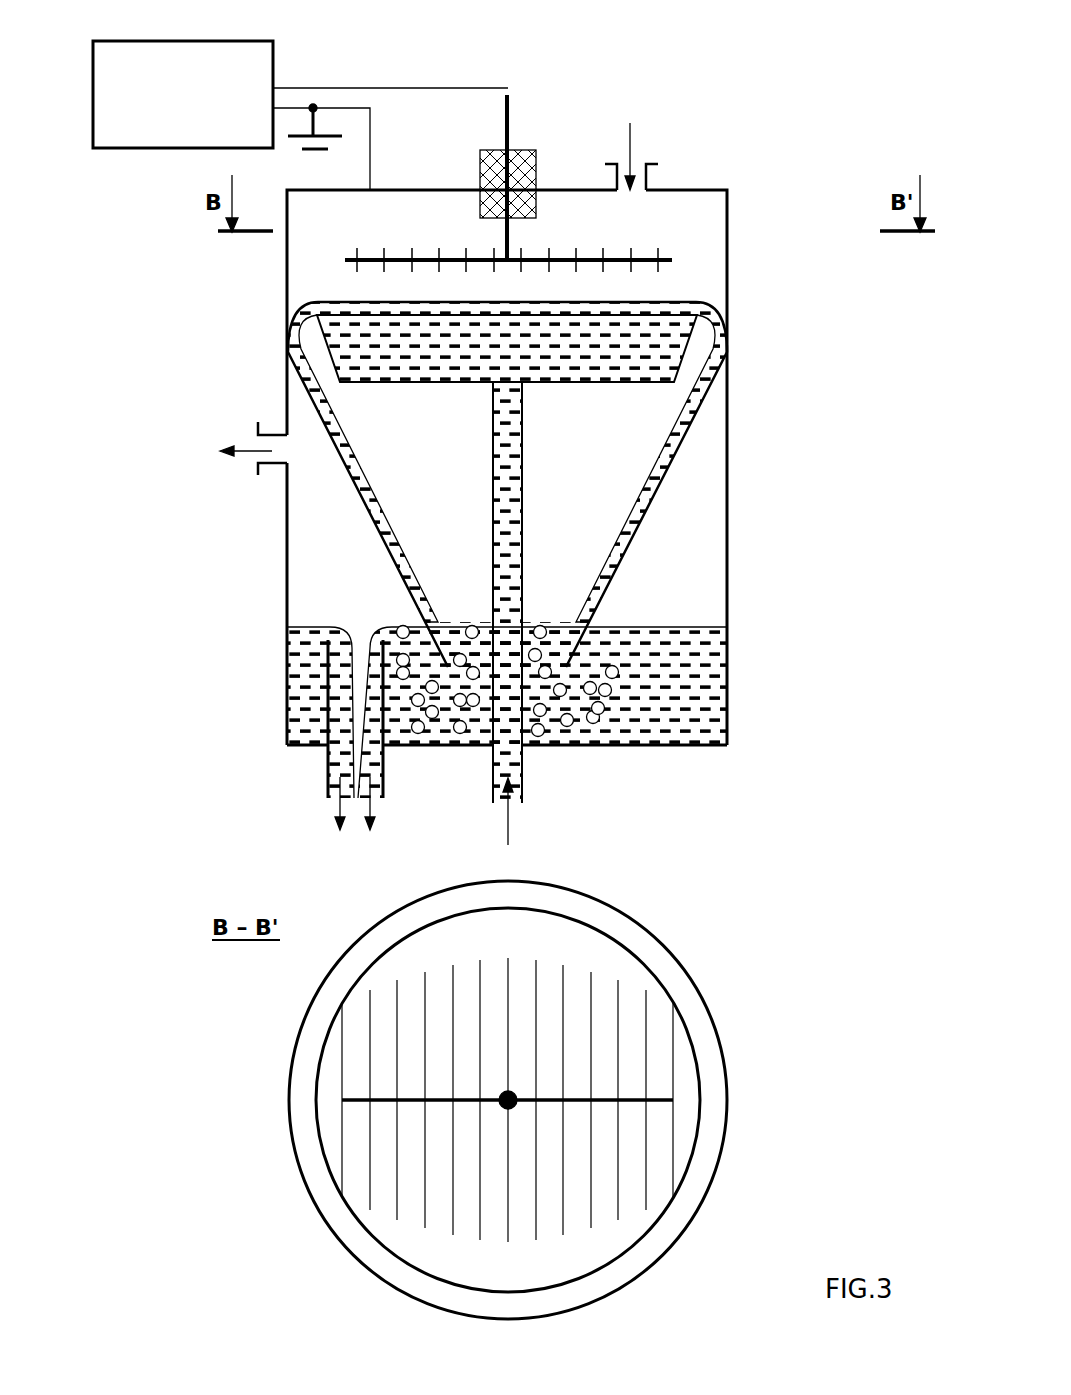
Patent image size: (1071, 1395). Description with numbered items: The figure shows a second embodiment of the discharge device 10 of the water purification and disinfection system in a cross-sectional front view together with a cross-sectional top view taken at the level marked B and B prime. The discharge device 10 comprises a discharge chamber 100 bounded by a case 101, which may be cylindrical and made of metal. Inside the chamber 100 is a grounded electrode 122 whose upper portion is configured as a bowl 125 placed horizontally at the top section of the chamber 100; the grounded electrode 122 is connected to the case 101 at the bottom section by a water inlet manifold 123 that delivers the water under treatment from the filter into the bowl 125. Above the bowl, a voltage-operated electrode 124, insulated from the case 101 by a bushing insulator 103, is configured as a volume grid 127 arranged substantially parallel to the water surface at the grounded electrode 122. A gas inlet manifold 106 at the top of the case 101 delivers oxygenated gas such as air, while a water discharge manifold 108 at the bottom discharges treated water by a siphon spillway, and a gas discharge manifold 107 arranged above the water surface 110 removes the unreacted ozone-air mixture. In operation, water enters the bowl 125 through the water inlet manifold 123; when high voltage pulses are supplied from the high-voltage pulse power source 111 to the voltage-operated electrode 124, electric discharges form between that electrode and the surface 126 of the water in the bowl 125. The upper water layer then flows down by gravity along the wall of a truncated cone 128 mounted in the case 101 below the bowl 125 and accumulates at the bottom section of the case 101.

The discharge device 10 is at (666, 60).
The discharge chamber 100 is at (308, 262).
The case 101 is at (733, 540).
The bushing insulator 103 is at (520, 149).
The gas inlet manifold 106 is at (660, 163).
The gas discharge manifold 107 is at (255, 467).
The water discharge manifold 108 is at (327, 773).
The water surface 110 is at (311, 626).
The high-voltage pulse power source 111 is at (152, 149).
The grounded electrode 122 is at (525, 490).
The water inlet manifold 123 is at (523, 773).
The voltage-operated electrode 124 is at (645, 258).
The bowl 125 is at (700, 350).
The surface of the water 126 is at (680, 302).
The volume grid 127 is at (617, 978).
The truncated cone 128 is at (410, 597).